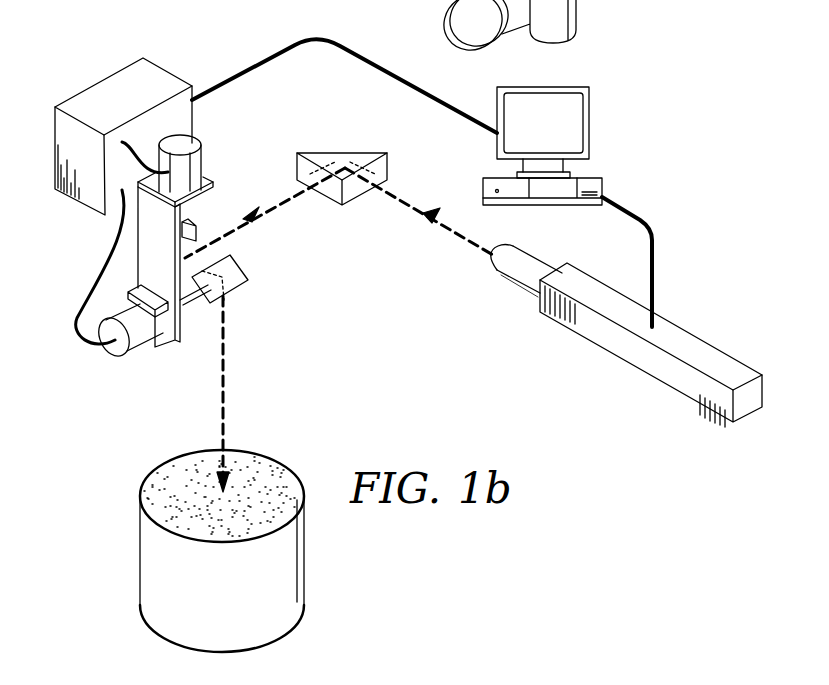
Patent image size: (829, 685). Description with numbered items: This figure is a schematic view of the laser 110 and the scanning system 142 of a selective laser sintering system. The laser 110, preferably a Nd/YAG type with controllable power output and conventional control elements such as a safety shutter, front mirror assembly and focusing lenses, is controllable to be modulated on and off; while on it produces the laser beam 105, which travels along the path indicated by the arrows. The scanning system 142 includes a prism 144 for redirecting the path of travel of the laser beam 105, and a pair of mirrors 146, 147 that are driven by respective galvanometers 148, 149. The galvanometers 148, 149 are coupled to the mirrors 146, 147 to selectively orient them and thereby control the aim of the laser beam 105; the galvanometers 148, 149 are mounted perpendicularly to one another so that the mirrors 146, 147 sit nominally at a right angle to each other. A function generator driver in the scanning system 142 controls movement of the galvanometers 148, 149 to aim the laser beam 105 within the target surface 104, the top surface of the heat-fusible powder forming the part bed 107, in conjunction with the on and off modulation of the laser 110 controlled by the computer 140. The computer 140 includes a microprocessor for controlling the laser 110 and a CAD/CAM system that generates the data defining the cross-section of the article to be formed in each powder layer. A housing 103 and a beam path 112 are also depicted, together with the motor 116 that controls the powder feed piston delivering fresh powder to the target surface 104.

The laser source / detector housing 103 is at (85, 95).
The target surface 104 is at (158, 473).
The laser beam 105 is at (227, 365).
The part bed 107 is at (303, 567).
The laser 110 is at (613, 343).
The laser beam 112 is at (258, 250).
The motor 116 is at (578, 10).
The computer 140 is at (590, 137).
The scanning system 142 is at (171, 58).
The prism 144 is at (386, 165).
The mirror 146 is at (192, 239).
The mirror 147 is at (236, 285).
The galvanometer 148 is at (197, 143).
The galvanometer 149 is at (115, 357).